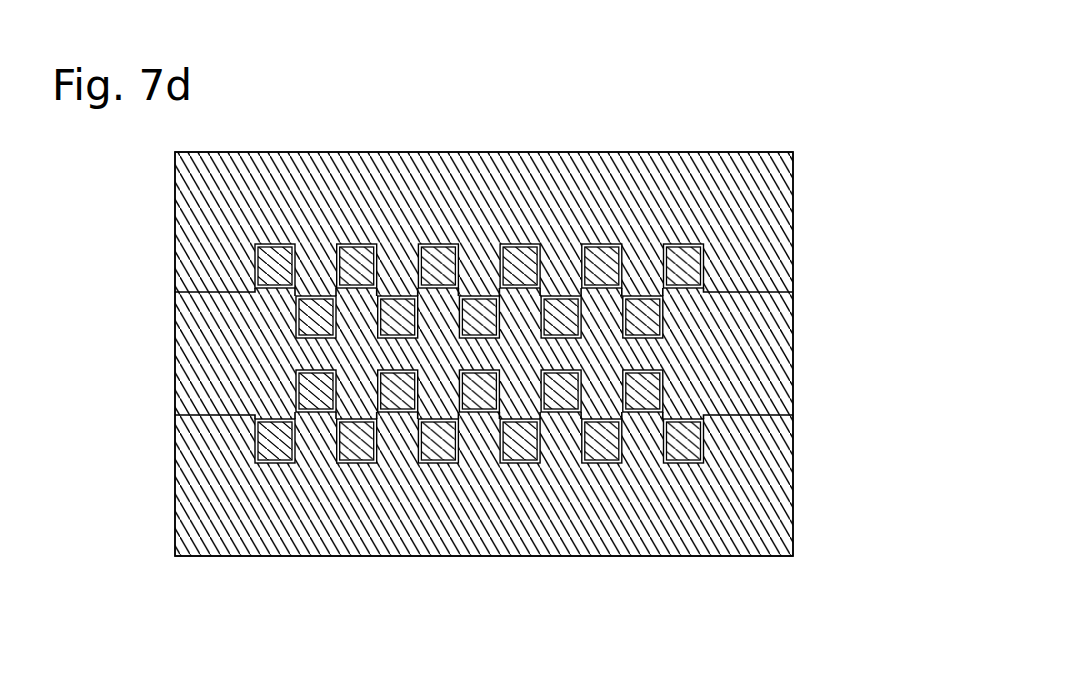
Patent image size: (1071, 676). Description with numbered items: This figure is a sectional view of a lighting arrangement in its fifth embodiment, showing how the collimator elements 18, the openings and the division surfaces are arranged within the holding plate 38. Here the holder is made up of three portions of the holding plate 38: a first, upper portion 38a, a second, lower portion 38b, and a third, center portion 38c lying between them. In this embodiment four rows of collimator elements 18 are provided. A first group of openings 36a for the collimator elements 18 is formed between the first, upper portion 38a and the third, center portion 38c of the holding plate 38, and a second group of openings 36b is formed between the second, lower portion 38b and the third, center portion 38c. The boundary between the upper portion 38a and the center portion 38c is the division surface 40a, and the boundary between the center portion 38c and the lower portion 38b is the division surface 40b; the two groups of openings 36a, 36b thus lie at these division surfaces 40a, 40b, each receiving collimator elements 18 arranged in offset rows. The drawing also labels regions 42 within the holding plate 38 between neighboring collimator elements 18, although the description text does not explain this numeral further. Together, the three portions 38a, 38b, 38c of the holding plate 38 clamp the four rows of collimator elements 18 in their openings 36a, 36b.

The collimator element 18 is at (428, 263).
The first group of openings 36a is at (642, 297).
The second group of openings 36b is at (642, 410).
The holding plate 38 is at (745, 118).
The first, upper portion of the holding plate 38a is at (779, 239).
The second, lower portion of the holding plate 38b is at (773, 490).
The third, center portion of the holding plate 38c is at (773, 348).
The division surface 40a is at (759, 291).
The division surface 40b is at (760, 414).
The gap region between conductive elements 42 is at (637, 263).